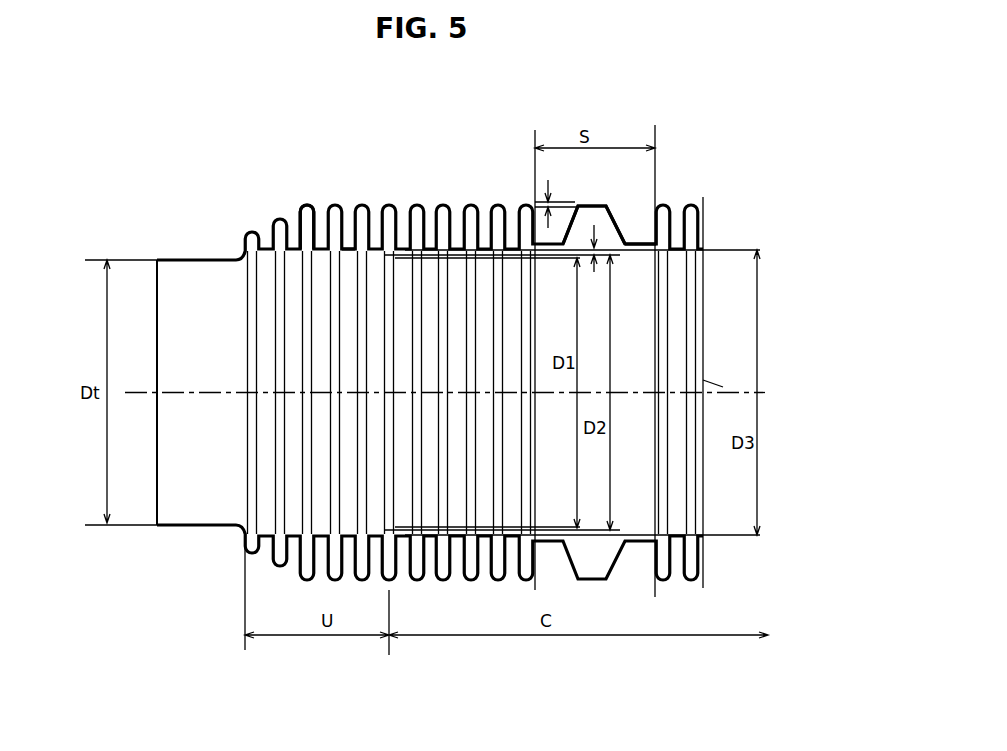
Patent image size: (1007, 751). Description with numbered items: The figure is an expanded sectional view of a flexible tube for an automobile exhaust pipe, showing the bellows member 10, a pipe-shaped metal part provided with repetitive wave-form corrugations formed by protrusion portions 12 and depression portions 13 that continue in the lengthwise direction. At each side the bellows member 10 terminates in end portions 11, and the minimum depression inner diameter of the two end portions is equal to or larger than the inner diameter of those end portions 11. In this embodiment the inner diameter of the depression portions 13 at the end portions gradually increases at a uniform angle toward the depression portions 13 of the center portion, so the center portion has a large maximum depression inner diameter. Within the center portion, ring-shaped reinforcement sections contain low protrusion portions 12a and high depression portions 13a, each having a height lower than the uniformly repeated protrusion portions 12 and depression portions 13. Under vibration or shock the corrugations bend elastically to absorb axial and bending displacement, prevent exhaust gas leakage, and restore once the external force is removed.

The bellows member 10 is at (249, 166).
The end portions 11 is at (203, 258).
The protrusion portions 12 is at (300, 203).
The depression portions 13 is at (348, 212).
The low protrusion portions 12a is at (592, 205).
The high depression portions 13a is at (642, 243).